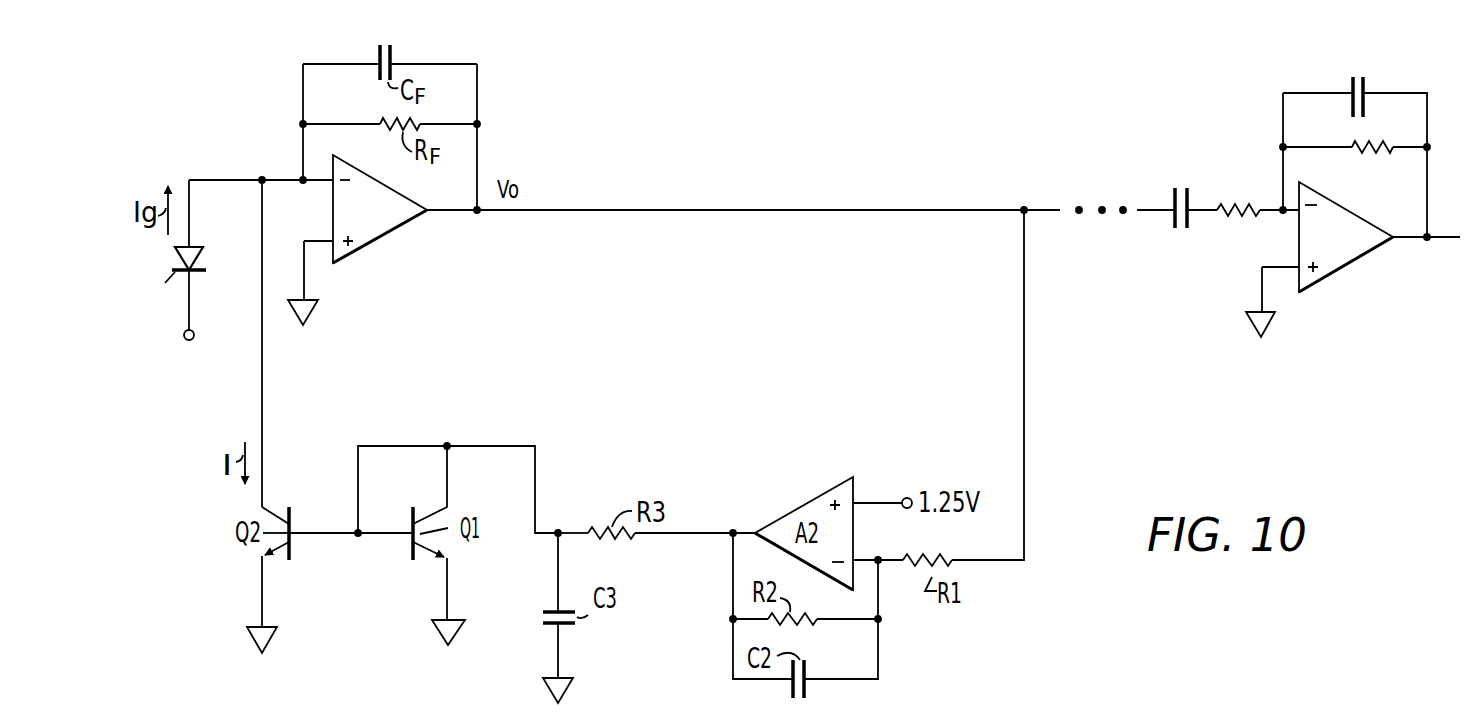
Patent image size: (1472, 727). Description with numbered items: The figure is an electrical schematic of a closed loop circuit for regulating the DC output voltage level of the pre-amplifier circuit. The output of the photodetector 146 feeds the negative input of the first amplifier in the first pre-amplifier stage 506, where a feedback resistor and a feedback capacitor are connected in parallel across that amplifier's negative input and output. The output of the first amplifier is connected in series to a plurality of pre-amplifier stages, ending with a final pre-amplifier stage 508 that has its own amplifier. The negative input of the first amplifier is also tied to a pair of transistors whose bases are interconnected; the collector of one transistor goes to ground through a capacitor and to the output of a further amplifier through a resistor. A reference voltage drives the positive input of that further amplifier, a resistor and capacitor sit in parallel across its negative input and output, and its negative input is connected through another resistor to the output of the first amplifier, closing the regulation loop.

The photodetector 146 is at (205, 257).
The first pre-amplifier stage 506 is at (366, 258).
The final pre-amplifier stage 508 is at (1316, 327).